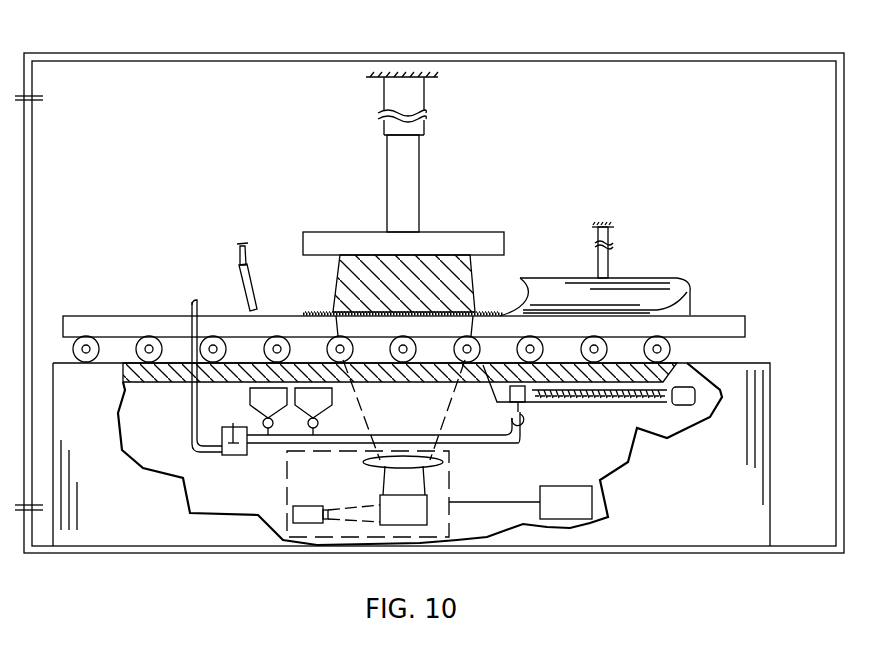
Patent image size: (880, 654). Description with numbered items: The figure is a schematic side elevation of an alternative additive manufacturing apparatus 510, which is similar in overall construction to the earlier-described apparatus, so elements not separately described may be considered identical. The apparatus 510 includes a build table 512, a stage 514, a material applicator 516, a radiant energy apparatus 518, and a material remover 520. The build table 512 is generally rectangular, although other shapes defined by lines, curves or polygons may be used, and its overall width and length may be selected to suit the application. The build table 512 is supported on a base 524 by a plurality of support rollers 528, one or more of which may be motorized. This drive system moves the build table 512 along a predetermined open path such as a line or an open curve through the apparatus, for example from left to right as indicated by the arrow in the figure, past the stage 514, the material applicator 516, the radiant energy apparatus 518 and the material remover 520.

The additive manufacturing apparatus 510 is at (512, 42).
The build table 512 is at (727, 328).
The stage 514 is at (470, 243).
The material applicator 516 is at (211, 262).
The radiant energy apparatus 518 is at (266, 486).
The material remover 520 is at (663, 258).
The base 524 is at (760, 542).
The support rollers 528 is at (75, 348).